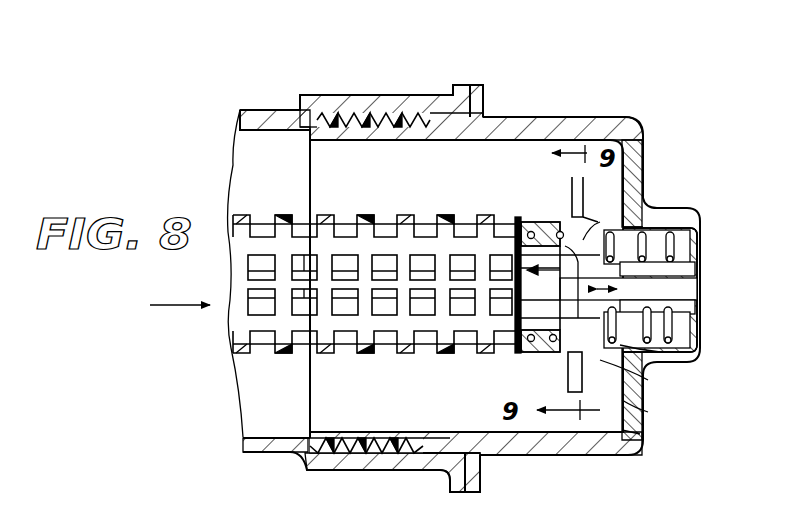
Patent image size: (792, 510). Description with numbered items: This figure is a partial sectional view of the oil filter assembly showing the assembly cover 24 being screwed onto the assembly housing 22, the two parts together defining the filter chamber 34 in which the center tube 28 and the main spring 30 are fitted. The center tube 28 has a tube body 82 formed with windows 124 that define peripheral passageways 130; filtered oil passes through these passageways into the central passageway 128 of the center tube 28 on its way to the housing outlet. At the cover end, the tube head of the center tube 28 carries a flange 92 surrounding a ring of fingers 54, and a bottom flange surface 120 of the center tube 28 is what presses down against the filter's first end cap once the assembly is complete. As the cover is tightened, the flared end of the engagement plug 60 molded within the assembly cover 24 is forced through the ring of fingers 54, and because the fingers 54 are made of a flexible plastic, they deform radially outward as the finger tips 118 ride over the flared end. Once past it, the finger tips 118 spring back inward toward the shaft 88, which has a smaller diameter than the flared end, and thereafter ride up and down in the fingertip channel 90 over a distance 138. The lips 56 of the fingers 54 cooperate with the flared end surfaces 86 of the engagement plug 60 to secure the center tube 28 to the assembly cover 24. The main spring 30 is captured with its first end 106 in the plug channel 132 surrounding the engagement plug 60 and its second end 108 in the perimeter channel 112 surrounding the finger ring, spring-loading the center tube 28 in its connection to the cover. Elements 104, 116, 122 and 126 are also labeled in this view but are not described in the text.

The assembly housing 22 is at (352, 104).
The assembly cover 24 is at (519, 113).
The center tube 28 is at (397, 210).
The main spring 30 is at (657, 246).
The filter chamber 34 is at (623, 224).
The fingers 54 is at (546, 224).
The lips 56 is at (540, 353).
The engagement plug 60 is at (692, 259).
The tube body 82 is at (366, 216).
The flared end surfaces 86 is at (650, 210).
The shaft 88 is at (648, 374).
The fingertip channel 90 is at (648, 408).
The flange 92 is at (641, 434).
The central passage 104 is at (698, 283).
The first end of main spring 106 is at (680, 342).
The second end of main spring 108 is at (503, 351).
The perimeter channel 112 is at (566, 218).
The plunger 116 is at (541, 226).
The finger tips 118 is at (586, 236).
The bottom flange surface 120 is at (569, 367).
The upper flange 122 is at (588, 178).
The windows 124 is at (387, 316).
The inlet edge 126 is at (231, 345).
The central passageway 128 is at (183, 307).
The peripheral passageways 130 is at (419, 345).
The plug channel 132 is at (660, 352).
The distance 138 is at (692, 308).